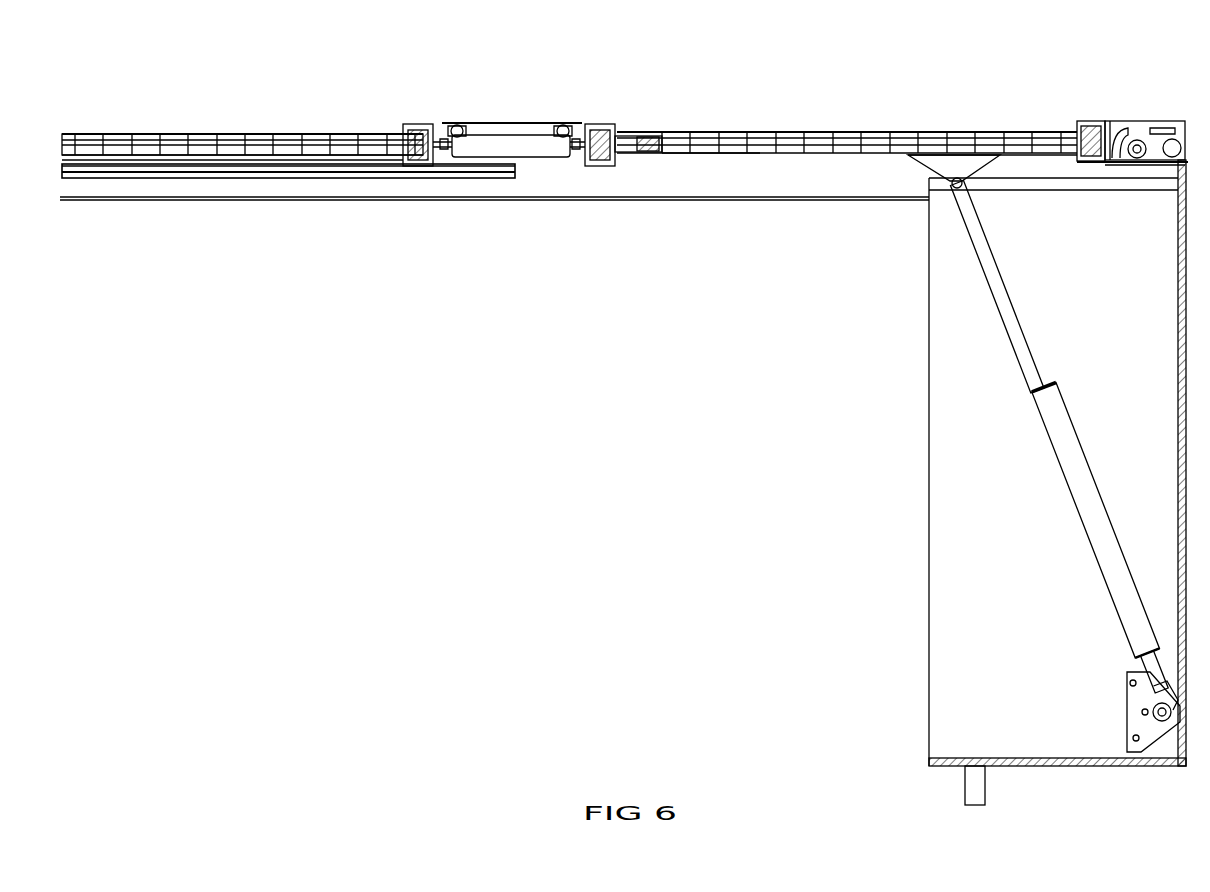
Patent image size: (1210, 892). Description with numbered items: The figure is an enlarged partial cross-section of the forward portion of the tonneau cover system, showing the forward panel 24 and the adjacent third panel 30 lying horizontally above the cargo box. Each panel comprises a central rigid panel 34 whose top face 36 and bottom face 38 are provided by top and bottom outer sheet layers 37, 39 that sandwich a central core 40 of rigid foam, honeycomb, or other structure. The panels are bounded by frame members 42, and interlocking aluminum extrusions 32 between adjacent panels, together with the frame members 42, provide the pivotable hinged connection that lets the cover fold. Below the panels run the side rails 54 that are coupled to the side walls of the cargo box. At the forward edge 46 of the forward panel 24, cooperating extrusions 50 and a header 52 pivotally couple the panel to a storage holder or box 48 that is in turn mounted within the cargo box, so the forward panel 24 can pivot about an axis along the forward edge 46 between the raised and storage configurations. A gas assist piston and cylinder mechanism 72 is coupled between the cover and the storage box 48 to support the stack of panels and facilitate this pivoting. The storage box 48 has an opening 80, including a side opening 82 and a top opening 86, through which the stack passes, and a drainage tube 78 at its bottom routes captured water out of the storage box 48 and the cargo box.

The forward panel 24 is at (1022, 88).
The third panel 30 is at (350, 72).
The aluminum extrusions 32 is at (500, 112).
The central rigid panel 34 is at (240, 110).
The top face 36 is at (150, 130).
The top outer sheet layer 37 is at (676, 132).
The bottom face 38 is at (168, 165).
The bottom outer sheet layer 39 is at (690, 154).
The central core 40 is at (762, 146).
The frame members 42 is at (420, 125).
The forward edge 46 is at (1108, 163).
The storage holder or box 48 is at (1180, 330).
The extrusions 50 is at (1142, 118).
The header 52 is at (1155, 165).
The side rails 54 is at (445, 190).
The gas assist piston and cylinder mechanism 72 is at (1050, 405).
The drainage tube 78 is at (970, 784).
The opening 80 is at (972, 318).
The side opening 82 is at (928, 582).
The top opening 86 is at (1048, 185).